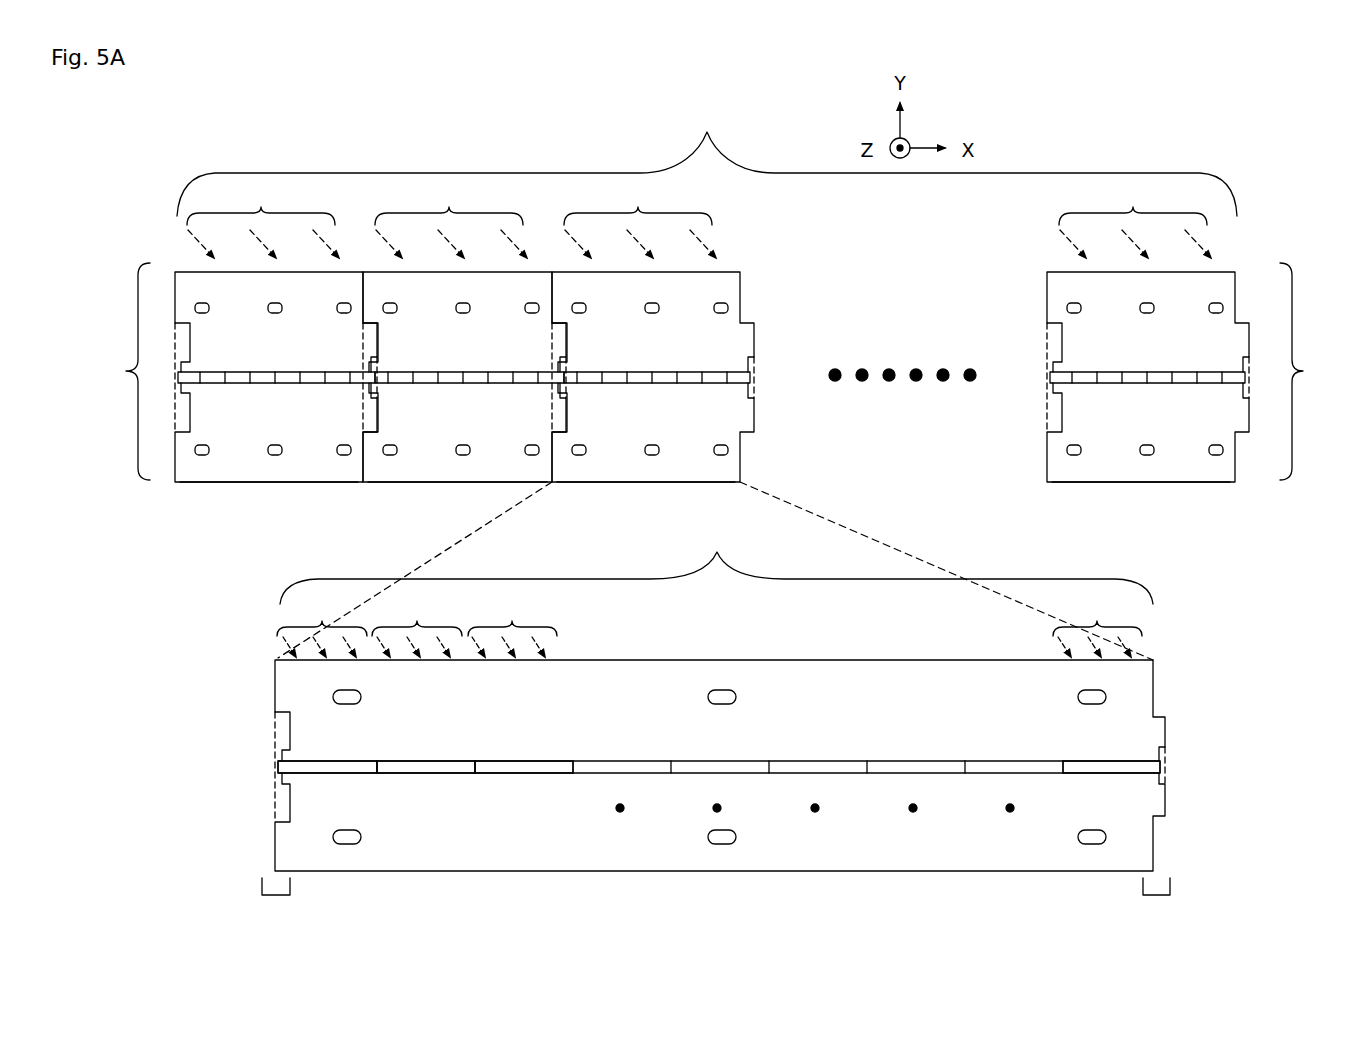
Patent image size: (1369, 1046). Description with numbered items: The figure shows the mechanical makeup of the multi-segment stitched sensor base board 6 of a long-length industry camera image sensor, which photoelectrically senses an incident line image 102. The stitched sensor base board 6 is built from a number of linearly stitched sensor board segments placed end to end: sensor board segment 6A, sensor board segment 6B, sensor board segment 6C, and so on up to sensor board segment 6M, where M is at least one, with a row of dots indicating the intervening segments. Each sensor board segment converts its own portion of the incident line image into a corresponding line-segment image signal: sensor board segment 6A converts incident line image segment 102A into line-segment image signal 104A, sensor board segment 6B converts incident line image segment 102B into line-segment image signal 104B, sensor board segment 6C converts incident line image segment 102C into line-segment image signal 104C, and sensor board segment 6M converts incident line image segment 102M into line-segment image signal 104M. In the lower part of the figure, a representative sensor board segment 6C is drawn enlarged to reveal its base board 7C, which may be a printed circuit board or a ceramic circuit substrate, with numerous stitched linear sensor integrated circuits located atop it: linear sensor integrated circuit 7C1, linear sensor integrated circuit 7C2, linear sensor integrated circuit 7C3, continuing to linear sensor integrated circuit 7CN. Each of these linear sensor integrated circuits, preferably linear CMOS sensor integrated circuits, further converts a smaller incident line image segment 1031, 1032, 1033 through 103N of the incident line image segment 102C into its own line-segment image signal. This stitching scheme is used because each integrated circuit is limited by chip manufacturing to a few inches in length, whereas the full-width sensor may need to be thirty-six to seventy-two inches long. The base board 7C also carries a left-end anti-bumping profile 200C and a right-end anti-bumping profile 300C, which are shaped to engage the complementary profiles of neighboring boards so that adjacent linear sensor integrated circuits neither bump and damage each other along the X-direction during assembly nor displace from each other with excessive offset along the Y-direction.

The incident line image 102 is at (700, 138).
The incident line image segment ILI1 102A is at (263, 222).
The incident line image segment ILI2 102B is at (451, 222).
The incident line image segment ILI3 102C is at (712, 562).
The incident line image segment ILIM 102M is at (1135, 222).
The stitched sensor base board 6 is at (126, 371).
The sensor board segment SBS1 6A is at (256, 354).
The sensor board segment SBS2 6B is at (444, 354).
The sensor board segment SBS3 6C is at (632, 354).
The sensor board segment SBSM 6M is at (1125, 354).
The line-segment image signal LSIS1 104A is at (237, 483).
The line-segment image signal LSIS2 104B is at (430, 483).
The line-segment image signal LSIS3 104C is at (635, 483).
The line-segment image signal LSISM 104M is at (1133, 483).
The incident line image segment 1031 is at (322, 624).
The incident line image segment 1032 is at (417, 624).
The incident line image segment 1033 is at (512, 624).
The incident line image segment 103N is at (1097, 624).
The base board BB3 7C is at (544, 719).
The linear sensor integrated circuit LSIC 7C1 is at (337, 774).
The linear sensor integrated circuit LSIC 7C2 is at (437, 774).
The linear sensor integrated circuit LSIC 7C3 is at (537, 774).
The linear sensor integrated circuit LSIC 7CN is at (1122, 774).
The left-end anti-bumping profile 200C is at (276, 896).
The right-end anti-bumping profile 300C is at (1157, 896).